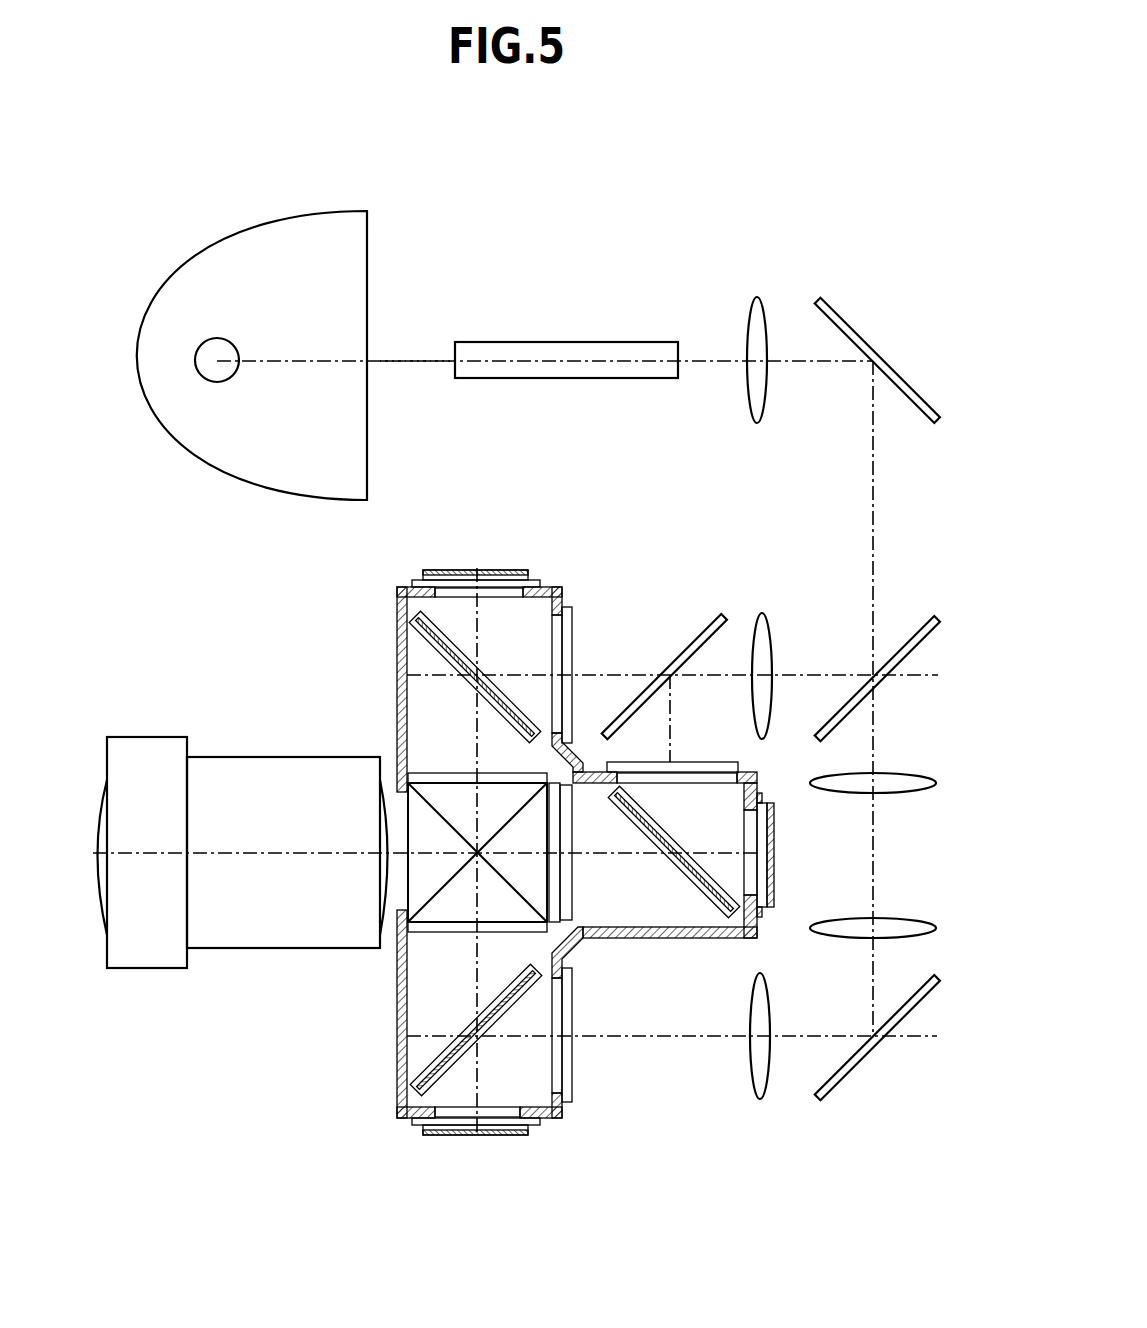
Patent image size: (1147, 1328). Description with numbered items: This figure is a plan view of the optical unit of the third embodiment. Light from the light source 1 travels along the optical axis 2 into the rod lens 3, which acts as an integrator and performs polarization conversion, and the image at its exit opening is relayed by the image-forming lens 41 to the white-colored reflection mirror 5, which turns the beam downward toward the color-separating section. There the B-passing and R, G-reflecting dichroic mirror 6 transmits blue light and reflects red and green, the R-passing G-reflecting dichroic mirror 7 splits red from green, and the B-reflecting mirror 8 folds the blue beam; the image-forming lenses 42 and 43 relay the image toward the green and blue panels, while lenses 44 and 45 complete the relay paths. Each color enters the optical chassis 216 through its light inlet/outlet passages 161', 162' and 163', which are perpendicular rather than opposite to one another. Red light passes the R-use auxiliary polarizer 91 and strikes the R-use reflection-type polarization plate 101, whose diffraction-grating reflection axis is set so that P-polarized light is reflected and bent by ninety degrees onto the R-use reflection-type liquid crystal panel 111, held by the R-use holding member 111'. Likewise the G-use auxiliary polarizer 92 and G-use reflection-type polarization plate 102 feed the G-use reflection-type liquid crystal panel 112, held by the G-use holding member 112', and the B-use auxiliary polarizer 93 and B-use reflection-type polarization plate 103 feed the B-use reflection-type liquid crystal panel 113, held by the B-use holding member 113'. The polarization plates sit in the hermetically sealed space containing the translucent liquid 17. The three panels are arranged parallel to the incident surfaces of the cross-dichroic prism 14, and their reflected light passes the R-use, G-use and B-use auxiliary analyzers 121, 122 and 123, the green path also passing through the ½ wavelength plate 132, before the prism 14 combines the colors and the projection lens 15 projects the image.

The light source 1 is at (322, 213).
The optical axis 2 is at (409, 352).
The rod lens 3 is at (538, 343).
The image-forming lens 41 is at (757, 300).
The white-colored reflection mirror 5 is at (848, 322).
The R-use holding member 111' is at (439, 553).
The passage 161' is at (537, 610).
The R-use reflection-type liquid crystal panel 111 is at (484, 540).
The R-use auxiliary polarizer 91 is at (566, 620).
The R-passing G-reflecting dichroic mirror 7 is at (702, 640).
The image-forming lens 42 is at (768, 614).
The B-passing and R, G-reflecting dichroic mirror 6 is at (938, 622).
The G-use auxiliary polarizer 92 is at (694, 765).
The passage 162' is at (718, 821).
The image-forming lens 43 is at (905, 778).
The G-use reflection-type liquid crystal panel 112 is at (803, 855).
The G-use holding member 112' is at (806, 855).
The relay lens 44 is at (902, 922).
The R-use reflection-type polarization plate 101 is at (426, 640).
The R-use auxiliary analyzer 121 is at (430, 775).
The G-use auxiliary analyzer 122 is at (575, 890).
The B-use auxiliary analyzer 123 is at (428, 930).
The ½ wavelength plate 132 is at (568, 958).
The G-use reflection-type polarization plate 102 is at (705, 890).
The passage 163' is at (535, 1090).
The translucent liquid 17 is at (533, 1065).
The B-use auxiliary polarizer 93 is at (572, 1100).
The optical chassis 216 is at (562, 1118).
The relay lens 45 is at (748, 1080).
The B-reflecting mirror 8 is at (890, 1032).
The projection lens 15 is at (258, 933).
The cross-dichroic prism 14 is at (419, 870).
The B-use holding member 113' is at (445, 1160).
The B-use reflection-type liquid crystal panel 113 is at (475, 1163).
The B-use reflection-type polarization plate 103 is at (452, 1048).